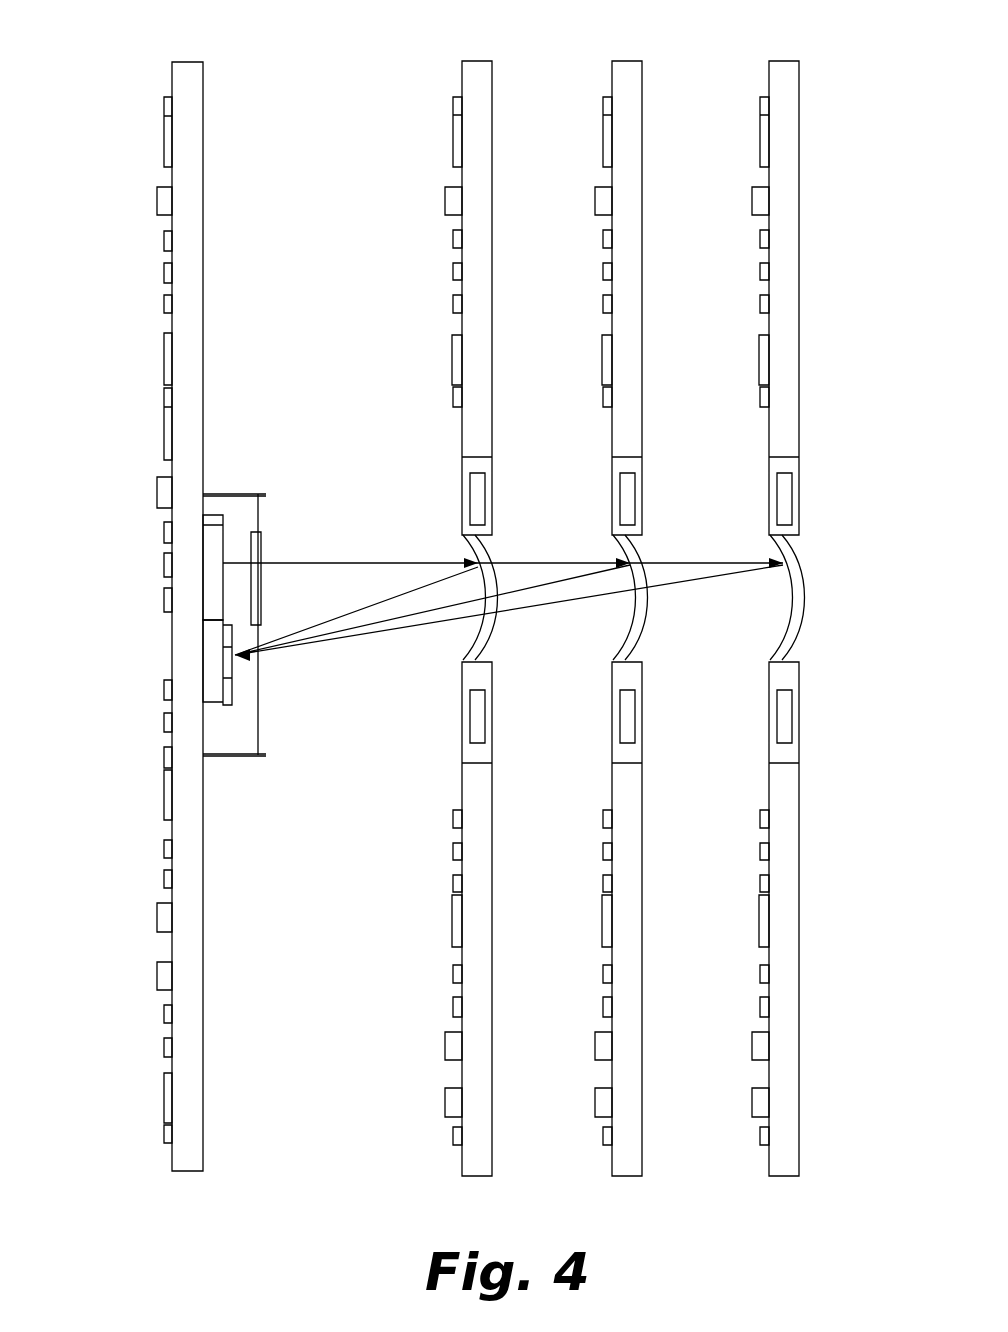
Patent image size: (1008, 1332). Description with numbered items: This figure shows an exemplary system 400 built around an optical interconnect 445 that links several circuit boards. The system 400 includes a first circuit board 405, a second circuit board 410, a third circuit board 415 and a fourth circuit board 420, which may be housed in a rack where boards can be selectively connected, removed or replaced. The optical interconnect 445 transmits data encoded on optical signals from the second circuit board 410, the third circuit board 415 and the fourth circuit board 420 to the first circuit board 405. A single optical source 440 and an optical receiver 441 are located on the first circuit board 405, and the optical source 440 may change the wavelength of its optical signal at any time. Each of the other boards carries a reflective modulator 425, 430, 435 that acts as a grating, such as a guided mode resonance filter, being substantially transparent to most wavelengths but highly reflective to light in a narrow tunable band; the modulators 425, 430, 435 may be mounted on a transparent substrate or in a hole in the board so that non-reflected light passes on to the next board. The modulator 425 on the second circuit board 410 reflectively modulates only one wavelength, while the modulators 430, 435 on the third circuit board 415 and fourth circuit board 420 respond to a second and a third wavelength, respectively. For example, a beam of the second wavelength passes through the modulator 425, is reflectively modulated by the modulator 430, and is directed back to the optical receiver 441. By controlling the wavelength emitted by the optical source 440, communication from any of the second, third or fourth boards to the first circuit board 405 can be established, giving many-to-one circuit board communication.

The system 400 is at (100, 11).
The first circuit board 405 is at (196, 83).
The second circuit board 410 is at (469, 86).
The third circuit board 415 is at (619, 85).
The fourth circuit board 420 is at (778, 77).
The reflective modulator 425 is at (486, 638).
The reflective modulator 430 is at (640, 630).
The reflective modulator 435 is at (800, 620).
The optical source 440 is at (208, 549).
The optical receiver 441 is at (232, 663).
The optical interconnect 445 is at (347, 455).